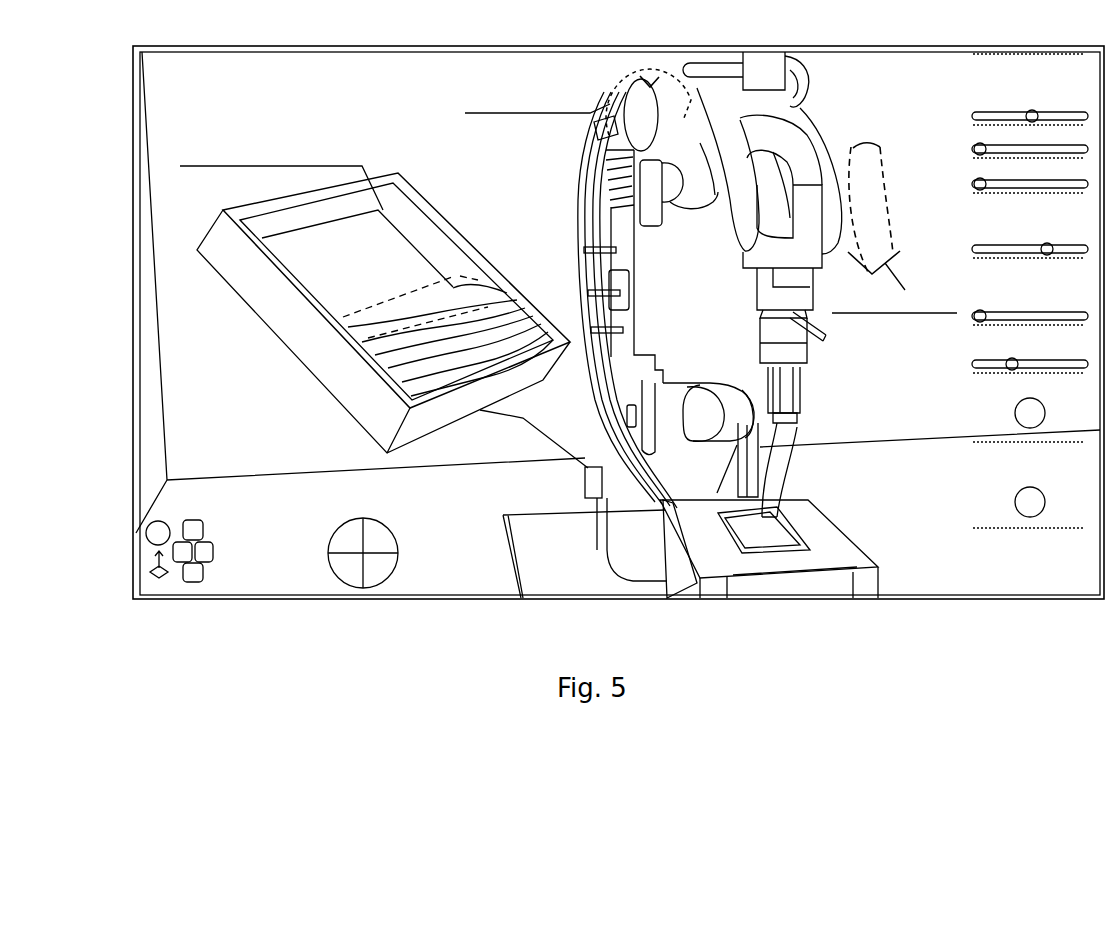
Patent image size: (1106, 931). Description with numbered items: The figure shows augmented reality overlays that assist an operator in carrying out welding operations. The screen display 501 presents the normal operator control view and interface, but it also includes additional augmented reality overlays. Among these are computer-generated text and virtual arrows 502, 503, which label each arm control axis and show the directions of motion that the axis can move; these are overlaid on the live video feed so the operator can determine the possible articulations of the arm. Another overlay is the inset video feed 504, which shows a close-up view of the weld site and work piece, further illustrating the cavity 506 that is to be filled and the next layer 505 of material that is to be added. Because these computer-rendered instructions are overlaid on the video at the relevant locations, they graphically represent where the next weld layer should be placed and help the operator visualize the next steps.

The screen display 501 is at (618, 305).
The virtual arrow 502 is at (671, 325).
The virtual arrow 503 is at (894, 228).
The inset video feed 504 is at (383, 313).
The next layer 505 is at (281, 164).
The cavity 506 is at (436, 329).